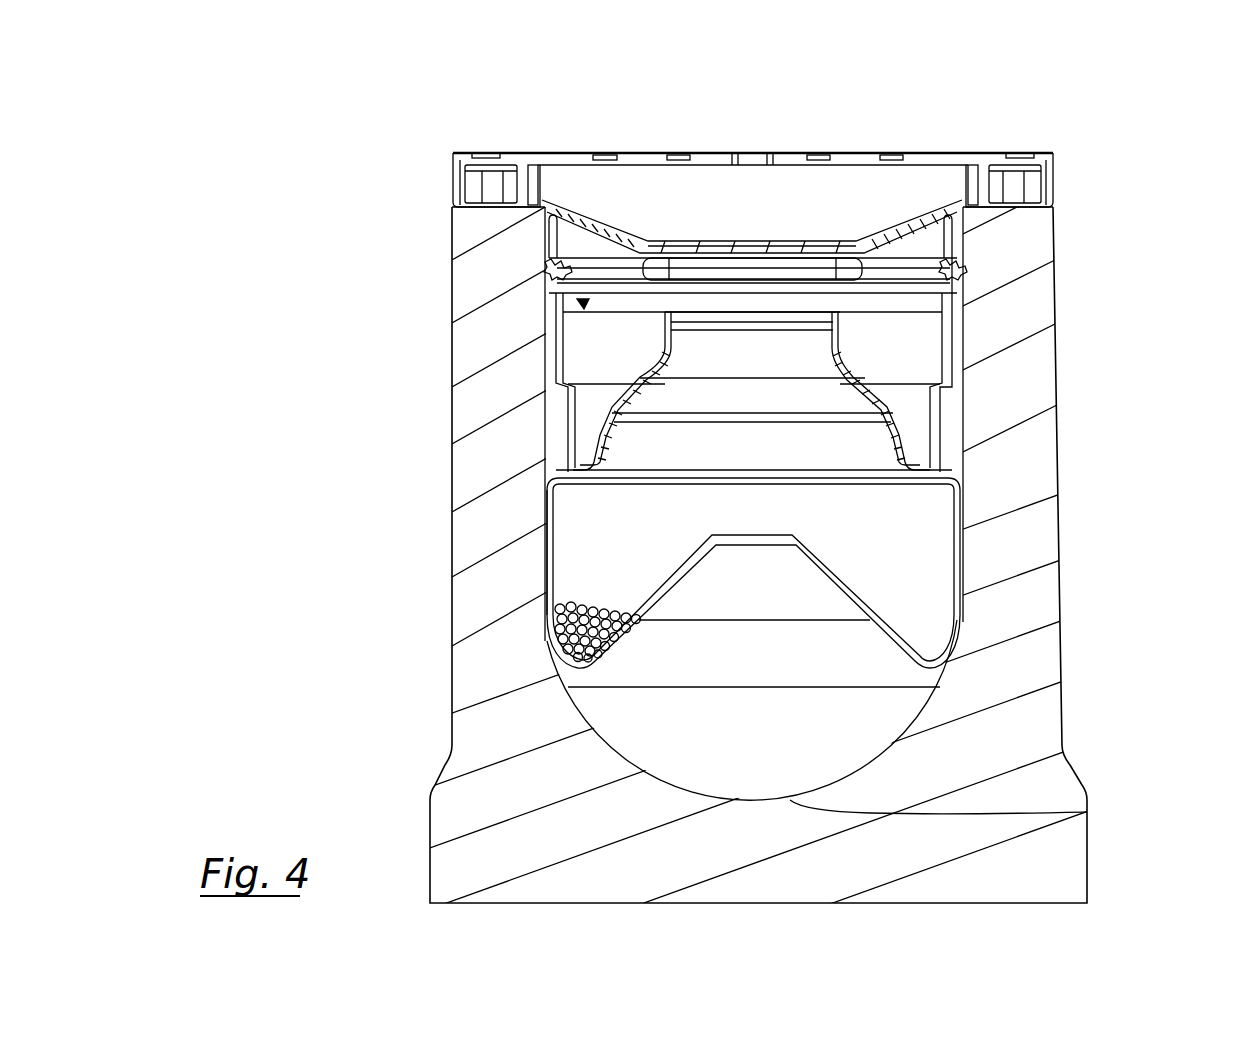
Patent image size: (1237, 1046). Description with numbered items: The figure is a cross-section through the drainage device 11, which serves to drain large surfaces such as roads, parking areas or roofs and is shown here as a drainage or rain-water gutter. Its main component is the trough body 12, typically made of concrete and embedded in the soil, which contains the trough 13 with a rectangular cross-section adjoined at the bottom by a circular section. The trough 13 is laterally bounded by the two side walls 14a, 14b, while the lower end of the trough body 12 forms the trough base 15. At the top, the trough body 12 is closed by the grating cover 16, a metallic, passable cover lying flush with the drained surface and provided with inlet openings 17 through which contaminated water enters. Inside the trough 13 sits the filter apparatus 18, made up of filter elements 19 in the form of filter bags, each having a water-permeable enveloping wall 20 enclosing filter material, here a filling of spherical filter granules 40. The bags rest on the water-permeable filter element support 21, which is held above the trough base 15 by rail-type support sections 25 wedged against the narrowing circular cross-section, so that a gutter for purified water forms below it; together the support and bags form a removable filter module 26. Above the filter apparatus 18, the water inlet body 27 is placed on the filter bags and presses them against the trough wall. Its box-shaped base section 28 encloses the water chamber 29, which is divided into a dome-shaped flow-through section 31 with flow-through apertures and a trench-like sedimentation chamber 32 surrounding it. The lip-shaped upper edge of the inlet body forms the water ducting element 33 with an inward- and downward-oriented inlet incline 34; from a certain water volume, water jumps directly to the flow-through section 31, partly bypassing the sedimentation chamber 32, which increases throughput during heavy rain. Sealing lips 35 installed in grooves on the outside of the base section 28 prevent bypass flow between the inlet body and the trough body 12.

The drainage device 11 is at (1122, 140).
The trough body 12 is at (1064, 308).
The trough 13 is at (900, 716).
The side wall 14a is at (470, 398).
The side wall 14b is at (1035, 400).
The trough base 15 is at (1087, 812).
The grating cover 16 is at (850, 158).
The inlet openings 17 is at (607, 153).
The filter apparatus 18 is at (938, 535).
The filter element 19 is at (548, 528).
The enveloping wall 20 is at (570, 515).
The filter element support 21 is at (726, 664).
The support section 25 is at (777, 668).
The filter module 26 is at (968, 588).
The water inlet body 27 is at (953, 345).
The base section 28 is at (560, 322).
The water chamber 29 is at (920, 300).
The flow-through section 31 is at (665, 350).
The sedimentation chamber 32 is at (923, 421).
The water ducting element 33 is at (597, 223).
The inlet incline 34 is at (914, 216).
The sealing lips 35 is at (957, 268).
The filter granules 40 is at (578, 604).